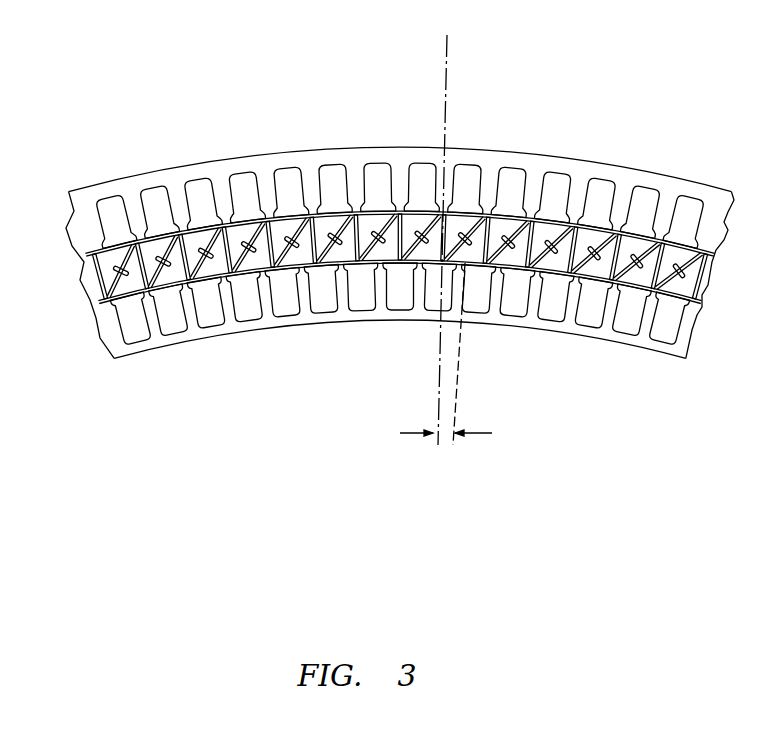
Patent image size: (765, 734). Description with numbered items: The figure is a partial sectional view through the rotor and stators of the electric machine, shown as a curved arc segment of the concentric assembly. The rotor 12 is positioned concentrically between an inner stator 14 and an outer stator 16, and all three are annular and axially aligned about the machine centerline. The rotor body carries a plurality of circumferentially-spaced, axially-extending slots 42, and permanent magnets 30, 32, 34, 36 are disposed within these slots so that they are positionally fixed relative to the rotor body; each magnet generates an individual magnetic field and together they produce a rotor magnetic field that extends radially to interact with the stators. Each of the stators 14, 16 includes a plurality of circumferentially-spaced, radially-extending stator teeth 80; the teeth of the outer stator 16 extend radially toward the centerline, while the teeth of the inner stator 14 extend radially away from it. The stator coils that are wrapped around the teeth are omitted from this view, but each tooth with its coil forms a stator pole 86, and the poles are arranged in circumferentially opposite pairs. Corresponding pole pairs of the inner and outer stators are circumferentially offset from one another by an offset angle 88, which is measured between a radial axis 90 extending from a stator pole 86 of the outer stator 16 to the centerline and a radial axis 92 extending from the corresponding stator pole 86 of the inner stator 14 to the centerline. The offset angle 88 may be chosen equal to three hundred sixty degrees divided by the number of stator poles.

The rotor 12 is at (371, 309).
The inner stator 14 is at (86, 306).
The outer stator 16 is at (48, 200).
The permanent magnet 30 is at (126, 262).
The permanent magnet 32 is at (162, 237).
The permanent magnet 34 is at (200, 275).
The permanent magnet 36 is at (257, 230).
The slots 42 is at (116, 290).
The stator teeth 80 is at (495, 187).
The stator pole 86 is at (458, 186).
The offset angle 88 is at (478, 433).
The radial axis 90 is at (436, 446).
The radial axis 92 is at (456, 447).